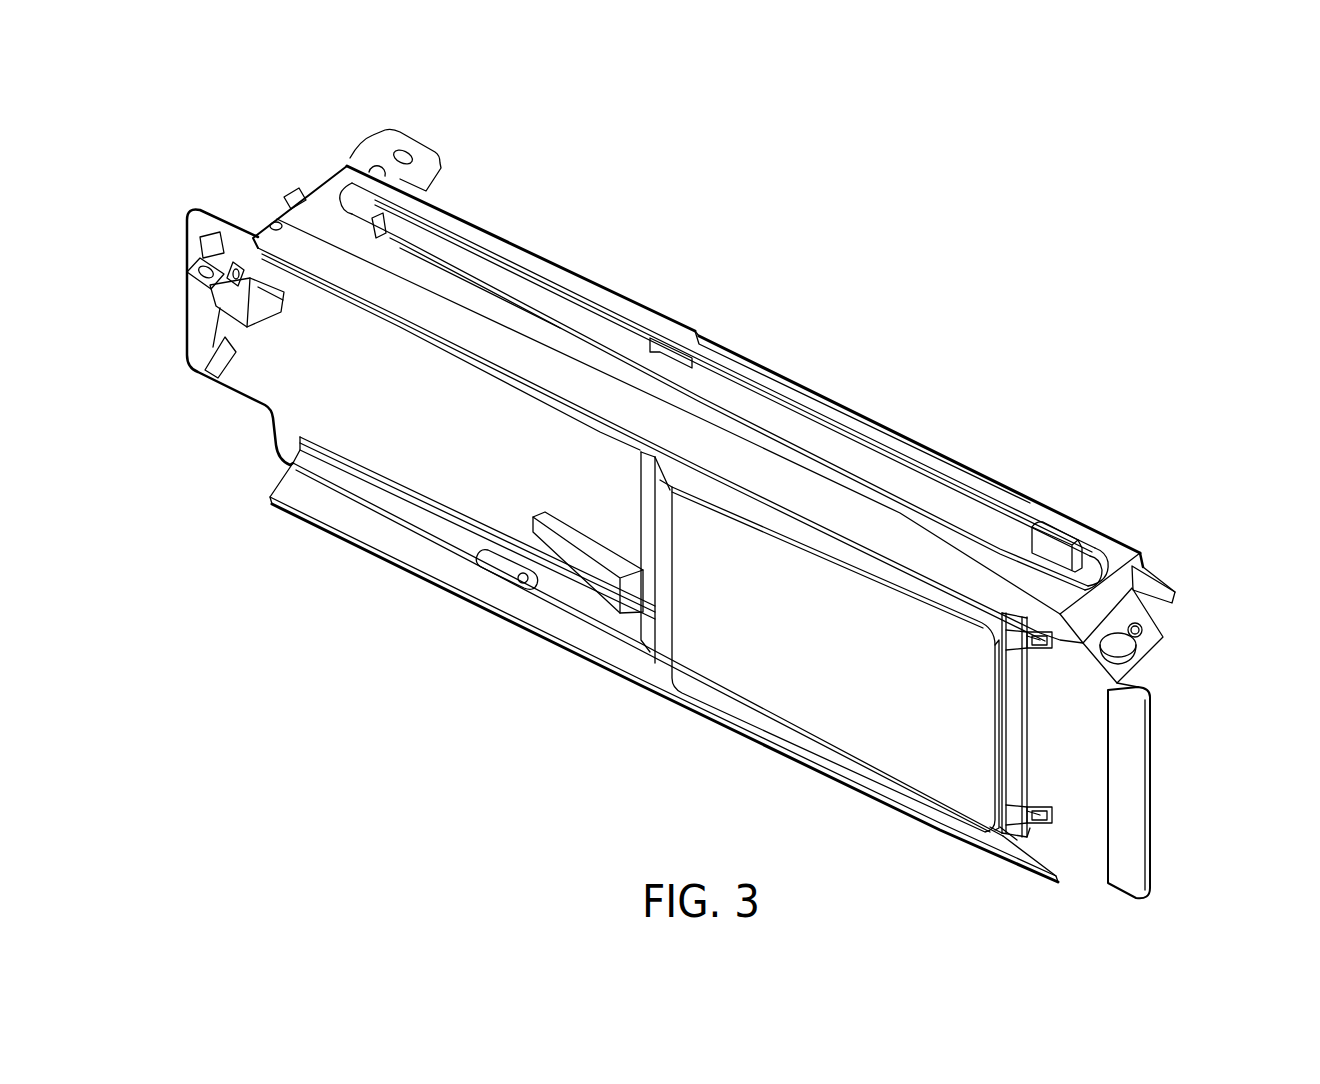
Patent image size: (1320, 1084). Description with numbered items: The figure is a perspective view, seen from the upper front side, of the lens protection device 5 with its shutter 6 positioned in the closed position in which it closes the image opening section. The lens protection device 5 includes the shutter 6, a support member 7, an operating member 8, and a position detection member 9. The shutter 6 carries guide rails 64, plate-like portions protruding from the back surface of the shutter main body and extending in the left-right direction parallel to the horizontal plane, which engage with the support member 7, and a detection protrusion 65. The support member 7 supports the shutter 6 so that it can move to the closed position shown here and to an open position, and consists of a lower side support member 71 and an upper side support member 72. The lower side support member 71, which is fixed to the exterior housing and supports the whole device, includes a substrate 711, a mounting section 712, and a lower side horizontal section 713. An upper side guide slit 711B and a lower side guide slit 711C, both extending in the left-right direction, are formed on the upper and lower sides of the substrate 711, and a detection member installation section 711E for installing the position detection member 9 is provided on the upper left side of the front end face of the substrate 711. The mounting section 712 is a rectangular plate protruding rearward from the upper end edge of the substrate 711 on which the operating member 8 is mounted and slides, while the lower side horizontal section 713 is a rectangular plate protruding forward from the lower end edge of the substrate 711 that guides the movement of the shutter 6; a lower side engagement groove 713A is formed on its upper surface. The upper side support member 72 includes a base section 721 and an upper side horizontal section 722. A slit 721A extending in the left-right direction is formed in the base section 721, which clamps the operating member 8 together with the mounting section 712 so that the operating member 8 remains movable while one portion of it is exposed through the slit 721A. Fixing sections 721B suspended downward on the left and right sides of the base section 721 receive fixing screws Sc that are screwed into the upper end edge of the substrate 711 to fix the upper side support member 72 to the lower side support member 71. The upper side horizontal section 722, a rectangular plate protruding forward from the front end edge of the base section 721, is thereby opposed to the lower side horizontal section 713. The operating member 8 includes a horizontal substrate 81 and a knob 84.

The lens protection device 5 is at (936, 268).
The shutter 6 is at (912, 770).
The guide rails 64 is at (1038, 632).
The detection protrusion 65 is at (592, 548).
The support member 7 is at (1218, 535).
The lower side support member 71 is at (1140, 688).
The substrate 711 is at (312, 392).
The upper side guide slit 711B is at (1042, 650).
The lower side guide slit 711C is at (1053, 815).
The detection member installation section 711E is at (213, 236).
The lower side horizontal section 713 is at (343, 520).
The lower side engagement groove 713A is at (530, 582).
The upper side support member 72 is at (1143, 550).
The base section 721 is at (668, 322).
The slit 721A is at (491, 268).
The fixing sections 721B is at (292, 192).
The mounting section 712 is at (562, 322).
The upper side horizontal section 722 is at (455, 323).
The operating member 8 is at (1080, 457).
The horizontal substrate 81 is at (975, 500).
The knob 84 is at (1053, 524).
The position detection member 9 is at (222, 322).
The fixing screws Sc is at (275, 226).